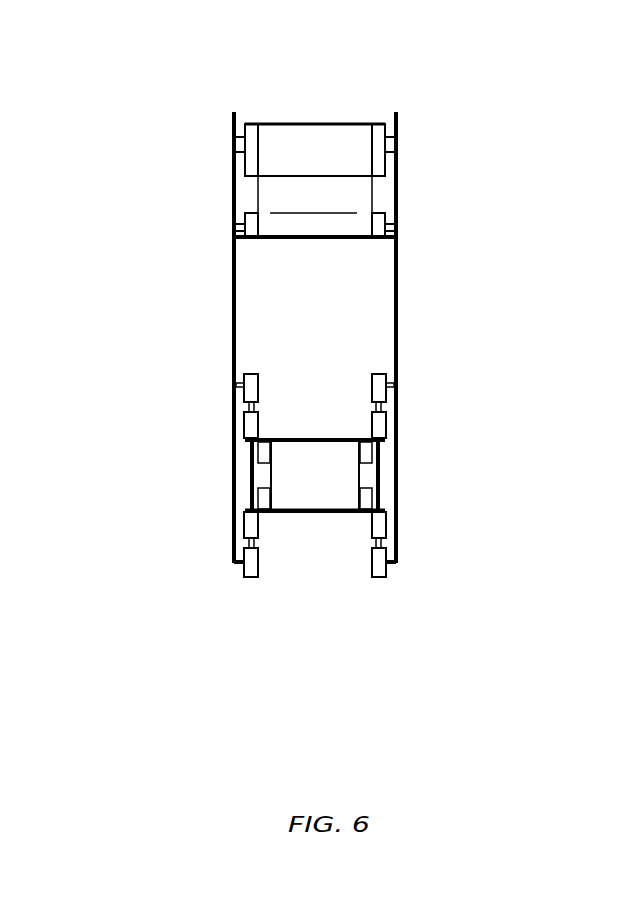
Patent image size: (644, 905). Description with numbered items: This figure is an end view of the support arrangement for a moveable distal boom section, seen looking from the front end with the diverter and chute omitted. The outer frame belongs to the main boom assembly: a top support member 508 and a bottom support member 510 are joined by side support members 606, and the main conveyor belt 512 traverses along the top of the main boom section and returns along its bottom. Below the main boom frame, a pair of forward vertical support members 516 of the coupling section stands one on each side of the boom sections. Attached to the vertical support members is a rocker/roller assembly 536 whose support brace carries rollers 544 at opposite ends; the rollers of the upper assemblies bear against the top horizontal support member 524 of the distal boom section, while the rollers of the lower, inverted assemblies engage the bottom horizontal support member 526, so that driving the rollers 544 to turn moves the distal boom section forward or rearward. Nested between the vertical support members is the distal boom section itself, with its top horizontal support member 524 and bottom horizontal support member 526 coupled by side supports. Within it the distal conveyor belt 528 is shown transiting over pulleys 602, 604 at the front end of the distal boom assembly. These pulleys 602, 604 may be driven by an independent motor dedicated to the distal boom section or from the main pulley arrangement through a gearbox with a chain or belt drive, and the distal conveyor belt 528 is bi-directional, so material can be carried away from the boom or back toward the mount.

The top support member 508 is at (233, 119).
The main conveyor belt 512 is at (311, 133).
The side support members 606 is at (233, 174).
The bottom support member 510 is at (233, 237).
The forward vertical support members 516 is at (232, 313).
The rocker/roller assembly 536 is at (248, 404).
The rollers 544 is at (372, 421).
The top horizontal support member 524 is at (248, 449).
The distal conveyor belt 528 is at (313, 497).
The pulley 604 is at (250, 490).
The pulley 602 is at (382, 466).
The bottom horizontal support member 526 is at (233, 507).